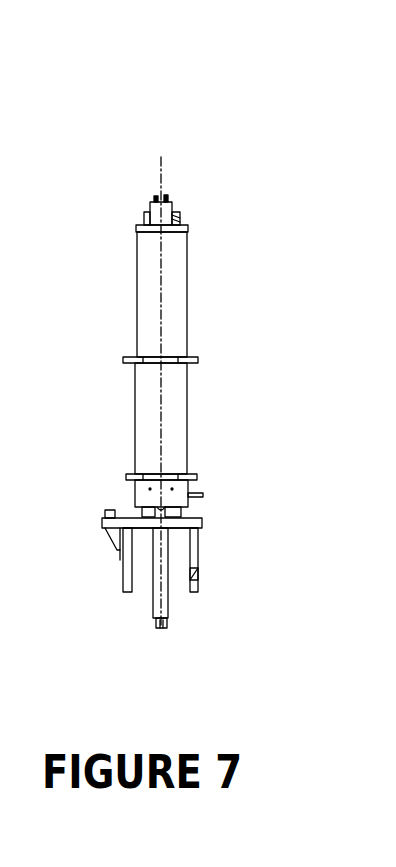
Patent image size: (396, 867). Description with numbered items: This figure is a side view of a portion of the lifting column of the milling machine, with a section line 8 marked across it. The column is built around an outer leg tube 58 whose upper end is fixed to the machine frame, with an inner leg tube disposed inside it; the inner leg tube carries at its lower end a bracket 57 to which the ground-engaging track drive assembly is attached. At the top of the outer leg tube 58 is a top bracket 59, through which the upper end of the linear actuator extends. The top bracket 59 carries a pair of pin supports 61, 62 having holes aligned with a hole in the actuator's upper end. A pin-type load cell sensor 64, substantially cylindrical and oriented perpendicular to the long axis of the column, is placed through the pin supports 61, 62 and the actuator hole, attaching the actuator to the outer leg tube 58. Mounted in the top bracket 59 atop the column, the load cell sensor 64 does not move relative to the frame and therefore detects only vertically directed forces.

The section line 8- 8 is at (161, 157).
The bracket 57 is at (200, 547).
The outer leg tube 58 is at (188, 290).
The top bracket 59 is at (132, 229).
The pin support 61 is at (144, 213).
The pin support 62 is at (174, 202).
The load cell sensor 64 is at (181, 214).